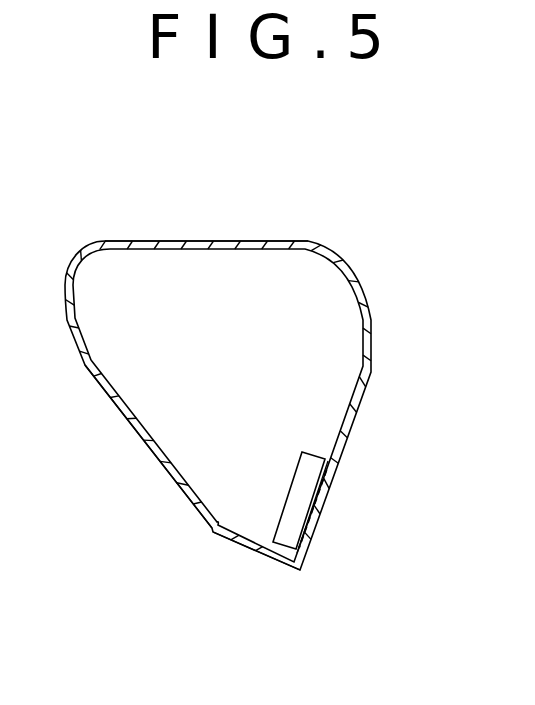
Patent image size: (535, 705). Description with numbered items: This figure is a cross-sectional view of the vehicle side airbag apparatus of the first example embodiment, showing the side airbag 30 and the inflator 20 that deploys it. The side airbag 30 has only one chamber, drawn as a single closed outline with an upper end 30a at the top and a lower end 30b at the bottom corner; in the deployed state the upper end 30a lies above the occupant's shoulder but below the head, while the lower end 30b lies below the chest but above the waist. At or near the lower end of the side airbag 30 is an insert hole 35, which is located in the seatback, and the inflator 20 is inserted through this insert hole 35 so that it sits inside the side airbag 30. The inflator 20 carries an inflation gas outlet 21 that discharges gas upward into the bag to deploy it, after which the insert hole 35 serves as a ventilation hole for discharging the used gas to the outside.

The side airbag 30 is at (268, 411).
The upper end of the side airbag 30a is at (262, 240).
The lower end of the side airbag 30b is at (290, 568).
The insert hole 35 is at (255, 551).
The inflator 20 is at (303, 503).
The inflation gas outlet 21 is at (314, 462).